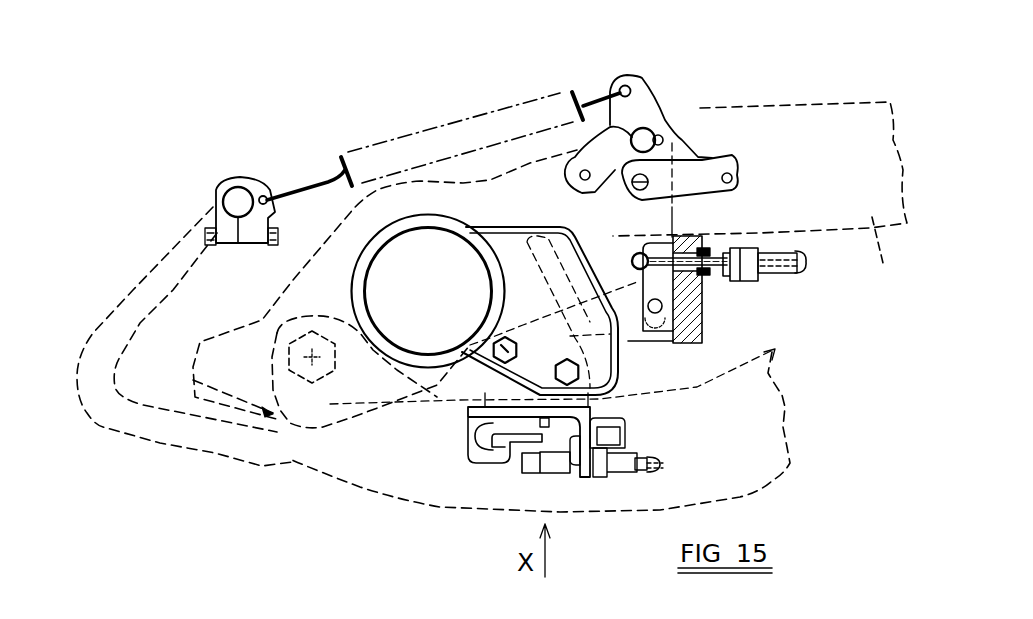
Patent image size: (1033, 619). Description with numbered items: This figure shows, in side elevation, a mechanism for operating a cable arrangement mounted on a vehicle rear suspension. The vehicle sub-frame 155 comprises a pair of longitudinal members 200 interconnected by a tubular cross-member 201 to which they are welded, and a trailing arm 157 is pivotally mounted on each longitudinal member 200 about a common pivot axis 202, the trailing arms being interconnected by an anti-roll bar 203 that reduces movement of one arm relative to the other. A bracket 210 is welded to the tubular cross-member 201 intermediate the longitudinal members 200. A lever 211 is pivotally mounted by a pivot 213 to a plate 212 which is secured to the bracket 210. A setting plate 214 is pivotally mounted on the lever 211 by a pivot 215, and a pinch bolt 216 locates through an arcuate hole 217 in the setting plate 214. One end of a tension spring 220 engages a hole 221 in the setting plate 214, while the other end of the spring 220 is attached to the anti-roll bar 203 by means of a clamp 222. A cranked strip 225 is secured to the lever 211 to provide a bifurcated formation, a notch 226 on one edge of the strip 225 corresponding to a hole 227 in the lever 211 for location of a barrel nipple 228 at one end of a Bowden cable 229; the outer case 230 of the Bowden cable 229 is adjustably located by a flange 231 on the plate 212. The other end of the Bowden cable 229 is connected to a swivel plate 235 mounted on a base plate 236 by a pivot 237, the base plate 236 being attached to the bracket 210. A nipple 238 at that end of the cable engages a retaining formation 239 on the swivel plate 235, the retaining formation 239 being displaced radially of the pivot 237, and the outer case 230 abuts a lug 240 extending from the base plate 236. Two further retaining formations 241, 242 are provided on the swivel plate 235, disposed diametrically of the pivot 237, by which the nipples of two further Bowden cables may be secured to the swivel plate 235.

The vehicle sub-frame 155 is at (819, 92).
The trailing arm 157 is at (788, 373).
The longitudinal member 200 is at (884, 254).
The tubular cross-member 201 is at (388, 243).
The pivot axis 202 is at (313, 358).
The anti-roll bar 203 is at (175, 446).
The bracket 210 is at (503, 228).
The lever 211 is at (665, 222).
The plate 212 is at (627, 325).
The pivot 213 is at (690, 320).
The setting plate 214 is at (648, 128).
The pivot 215 is at (707, 158).
The pinch bolt 216 is at (655, 131).
The arcuate hole 217 is at (668, 140).
The tension spring 220 is at (405, 133).
The hole 221 is at (627, 85).
The clamp 222 is at (258, 182).
The cranked strip 225 is at (660, 290).
The notch 226 is at (700, 240).
The hole 227 is at (633, 255).
The barrel nipple 228 is at (660, 266).
The Bowden cable 229 is at (797, 266).
The outer case 230 is at (783, 272).
The flange 231 is at (696, 343).
The swivel plate 235 is at (487, 432).
The base plate 236 is at (467, 413).
The pivot 237 is at (543, 425).
The nipple 238 is at (534, 473).
The retaining formation 239 is at (562, 473).
The lug 240 is at (590, 478).
The retaining formation 241 is at (473, 458).
The retaining formation 242 is at (618, 432).